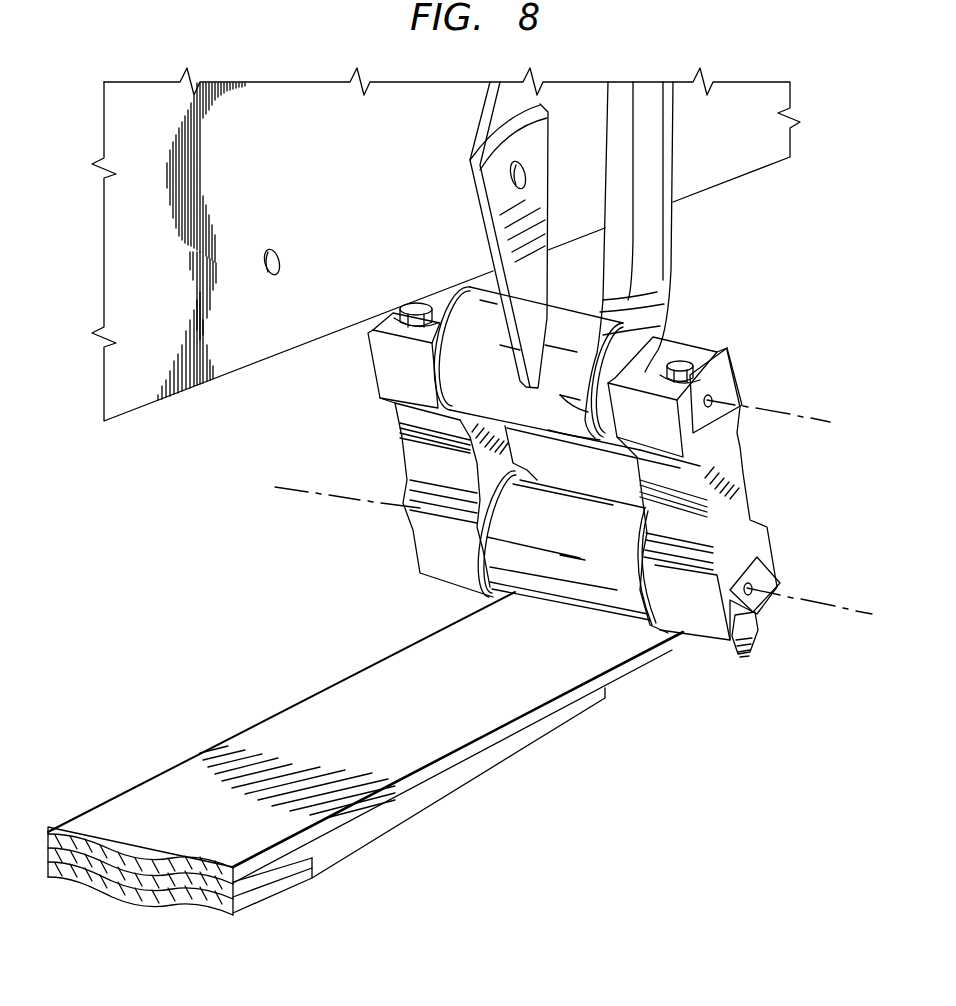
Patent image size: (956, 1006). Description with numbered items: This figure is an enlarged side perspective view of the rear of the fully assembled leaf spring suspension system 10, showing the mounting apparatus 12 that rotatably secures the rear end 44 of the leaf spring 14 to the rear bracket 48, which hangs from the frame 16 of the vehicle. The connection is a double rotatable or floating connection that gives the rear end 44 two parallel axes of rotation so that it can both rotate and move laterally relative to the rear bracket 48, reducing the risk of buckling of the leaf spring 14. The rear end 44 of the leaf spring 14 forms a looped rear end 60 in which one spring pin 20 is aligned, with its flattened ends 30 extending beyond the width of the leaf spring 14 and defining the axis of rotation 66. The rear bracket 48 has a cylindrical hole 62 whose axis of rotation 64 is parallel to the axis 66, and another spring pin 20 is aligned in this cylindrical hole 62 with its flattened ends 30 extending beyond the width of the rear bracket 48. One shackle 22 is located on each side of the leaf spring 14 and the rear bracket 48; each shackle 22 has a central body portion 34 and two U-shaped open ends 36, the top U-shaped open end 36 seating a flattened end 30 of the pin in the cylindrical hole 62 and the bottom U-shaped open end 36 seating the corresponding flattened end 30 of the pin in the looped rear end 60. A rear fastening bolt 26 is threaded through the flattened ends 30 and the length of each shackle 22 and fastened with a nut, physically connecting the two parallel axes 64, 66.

The leaf spring suspension system 10 is at (716, 722).
The mounting apparatus 12 is at (580, 470).
The leaf spring 14 is at (447, 793).
The frame 16 is at (735, 160).
The spring pin 20 is at (713, 400).
The shackle 22 is at (569, 470).
The rear fastening bolt 26 is at (416, 304).
The flattened end 30 is at (707, 352).
The central body portion 34 is at (405, 455).
The U-shaped open end 36 is at (390, 365).
The rear end 44 is at (628, 672).
The rear bracket 48 is at (660, 241).
The looped rear end 60 is at (556, 585).
The cylindrical hole 62 is at (612, 353).
The axis of rotation 64 is at (820, 410).
The axis of rotation 66 is at (862, 604).